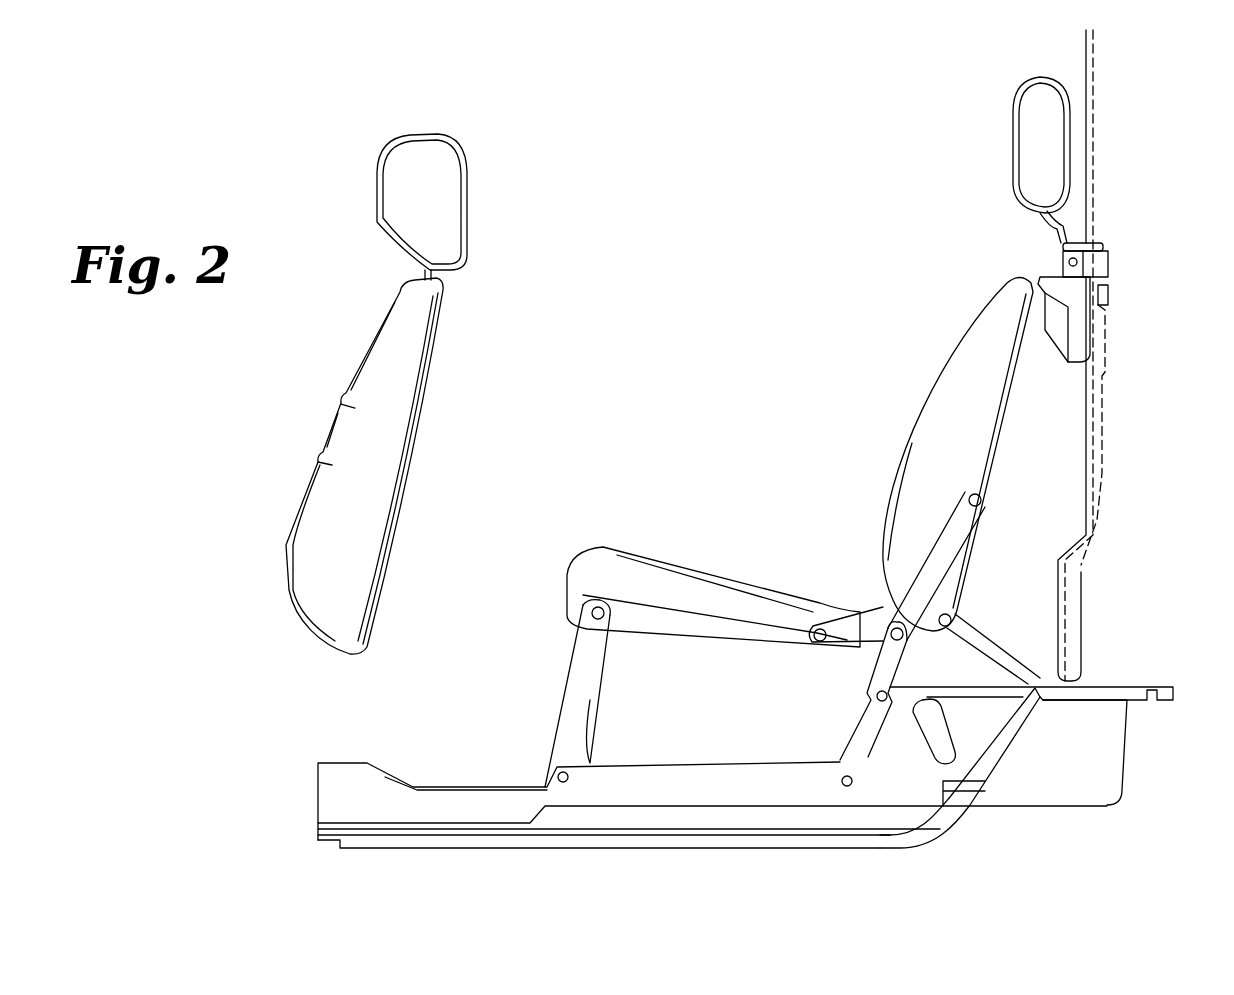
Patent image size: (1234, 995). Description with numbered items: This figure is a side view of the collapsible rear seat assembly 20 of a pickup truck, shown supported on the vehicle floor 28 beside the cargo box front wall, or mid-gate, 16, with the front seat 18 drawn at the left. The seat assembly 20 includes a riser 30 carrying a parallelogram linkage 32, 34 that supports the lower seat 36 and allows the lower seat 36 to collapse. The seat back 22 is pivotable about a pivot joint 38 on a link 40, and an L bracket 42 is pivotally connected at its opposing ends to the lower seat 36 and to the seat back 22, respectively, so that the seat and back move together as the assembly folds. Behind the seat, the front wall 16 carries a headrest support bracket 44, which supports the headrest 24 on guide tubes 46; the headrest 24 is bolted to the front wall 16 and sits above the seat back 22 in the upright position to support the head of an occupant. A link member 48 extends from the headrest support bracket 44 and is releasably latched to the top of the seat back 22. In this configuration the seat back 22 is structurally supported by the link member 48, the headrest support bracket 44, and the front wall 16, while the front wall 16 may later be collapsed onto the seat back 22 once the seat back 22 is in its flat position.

The front wall 16 is at (1105, 432).
The front seat 18 is at (318, 592).
The collapsible rear seat assembly 20 is at (756, 444).
The seat back 22 is at (960, 430).
The headrest 24 is at (1037, 137).
The vehicle floor 28 is at (740, 843).
The riser 30 is at (678, 785).
The parallelogram linkage 32 is at (577, 713).
The parallelogram linkage 34 is at (890, 668).
The lower seat 36 is at (647, 577).
The pivot joint 38 is at (957, 613).
The link 40 is at (1012, 665).
The L bracket 42 is at (952, 540).
The headrest support bracket 44 is at (1083, 340).
The guide tubes 46 is at (1066, 224).
The link member 48 is at (1052, 287).